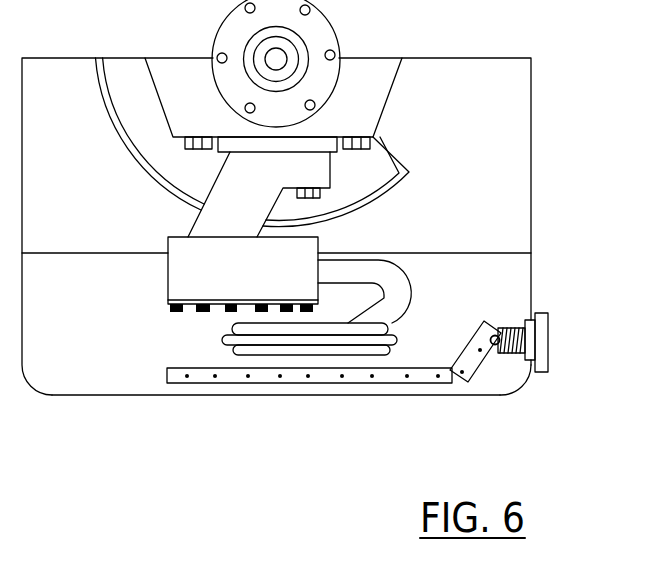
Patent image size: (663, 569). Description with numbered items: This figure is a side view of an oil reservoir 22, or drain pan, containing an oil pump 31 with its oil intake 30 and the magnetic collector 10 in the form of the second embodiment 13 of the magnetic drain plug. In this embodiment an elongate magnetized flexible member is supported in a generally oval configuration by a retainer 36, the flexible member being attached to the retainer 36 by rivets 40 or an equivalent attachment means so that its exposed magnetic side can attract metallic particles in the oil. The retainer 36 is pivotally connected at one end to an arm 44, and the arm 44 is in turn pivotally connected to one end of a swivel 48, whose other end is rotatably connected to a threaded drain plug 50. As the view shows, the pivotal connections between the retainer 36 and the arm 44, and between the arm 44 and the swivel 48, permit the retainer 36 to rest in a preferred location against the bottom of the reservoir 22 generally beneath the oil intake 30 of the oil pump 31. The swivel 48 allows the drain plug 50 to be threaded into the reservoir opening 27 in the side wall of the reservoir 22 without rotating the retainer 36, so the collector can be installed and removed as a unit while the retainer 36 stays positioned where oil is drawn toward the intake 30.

The magnetic collector 10 is at (448, 405).
The second embodiment of the magnetic drain plug 13 is at (508, 379).
The reservoir 22 is at (531, 193).
The reservoir opening 27 is at (535, 316).
The oil intake 30 is at (232, 351).
The oil pump 31 is at (177, 275).
The retainer 36 is at (198, 383).
The rivets 40 is at (308, 380).
The arm 44 is at (471, 340).
The swivel 48 is at (495, 335).
The threaded drain plug 50 is at (548, 347).